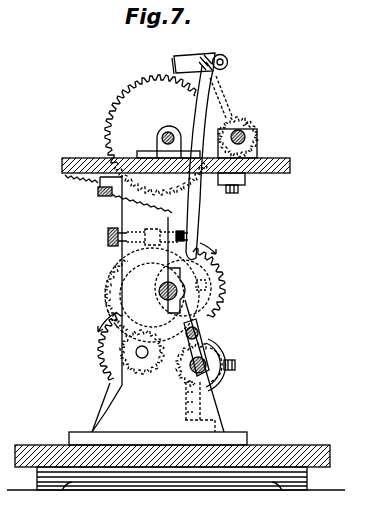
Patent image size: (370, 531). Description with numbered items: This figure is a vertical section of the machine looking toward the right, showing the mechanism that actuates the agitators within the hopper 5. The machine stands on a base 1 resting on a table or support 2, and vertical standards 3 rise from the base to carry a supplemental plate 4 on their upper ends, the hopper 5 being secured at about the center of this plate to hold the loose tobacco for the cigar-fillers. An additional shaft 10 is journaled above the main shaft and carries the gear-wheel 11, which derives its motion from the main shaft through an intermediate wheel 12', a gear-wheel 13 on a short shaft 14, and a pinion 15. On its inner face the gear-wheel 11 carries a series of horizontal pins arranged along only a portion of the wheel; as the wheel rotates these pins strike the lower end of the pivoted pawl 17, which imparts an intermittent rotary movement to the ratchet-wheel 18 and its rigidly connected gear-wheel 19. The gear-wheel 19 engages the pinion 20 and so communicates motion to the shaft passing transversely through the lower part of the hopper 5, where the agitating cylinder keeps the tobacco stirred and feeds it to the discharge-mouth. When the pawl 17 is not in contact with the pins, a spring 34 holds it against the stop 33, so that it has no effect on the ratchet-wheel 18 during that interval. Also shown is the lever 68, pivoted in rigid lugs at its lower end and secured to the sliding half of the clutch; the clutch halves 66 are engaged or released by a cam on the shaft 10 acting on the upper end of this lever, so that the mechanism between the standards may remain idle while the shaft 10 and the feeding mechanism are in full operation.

The base 1 is at (179, 449).
The table or support 2 is at (176, 486).
The vertical standards 3 is at (146, 229).
The supplemental plate 4 is at (182, 175).
The hopper 5 is at (156, 149).
The additional shaft 10 is at (166, 265).
The gear-wheel 11 is at (197, 280).
The intermediate wheel 12' is at (188, 363).
The gear-wheel 13 is at (106, 346).
The short shaft 14 is at (142, 352).
The pinion 15 is at (142, 358).
The pivoted pawl 17 is at (200, 156).
The ratchet-wheel 18 is at (224, 114).
The gear-wheel 19 is at (224, 97).
The pinion 20 is at (253, 118).
The stop 33 is at (192, 234).
The spring 34 is at (104, 197).
The disc 66 is at (224, 359).
The lever 68 is at (233, 375).